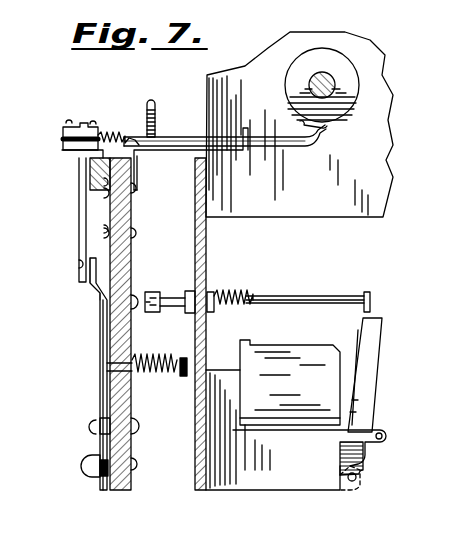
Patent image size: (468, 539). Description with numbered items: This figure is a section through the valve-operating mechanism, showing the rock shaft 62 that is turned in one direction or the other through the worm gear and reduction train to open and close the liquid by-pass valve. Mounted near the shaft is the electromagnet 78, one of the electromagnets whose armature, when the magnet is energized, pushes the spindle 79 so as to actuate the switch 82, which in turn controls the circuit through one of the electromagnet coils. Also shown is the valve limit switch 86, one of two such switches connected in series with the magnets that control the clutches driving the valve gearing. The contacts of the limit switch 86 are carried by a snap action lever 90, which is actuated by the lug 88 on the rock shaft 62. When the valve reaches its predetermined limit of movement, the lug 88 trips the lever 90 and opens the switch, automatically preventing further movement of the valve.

The rock shaft 62 is at (330, 80).
The electromagnet 78 is at (290, 382).
The spindle 79 is at (290, 302).
The switch 82 is at (98, 290).
The valve limit switch 86 is at (100, 125).
The lug 88 is at (300, 122).
The snap action lever 90 is at (178, 137).